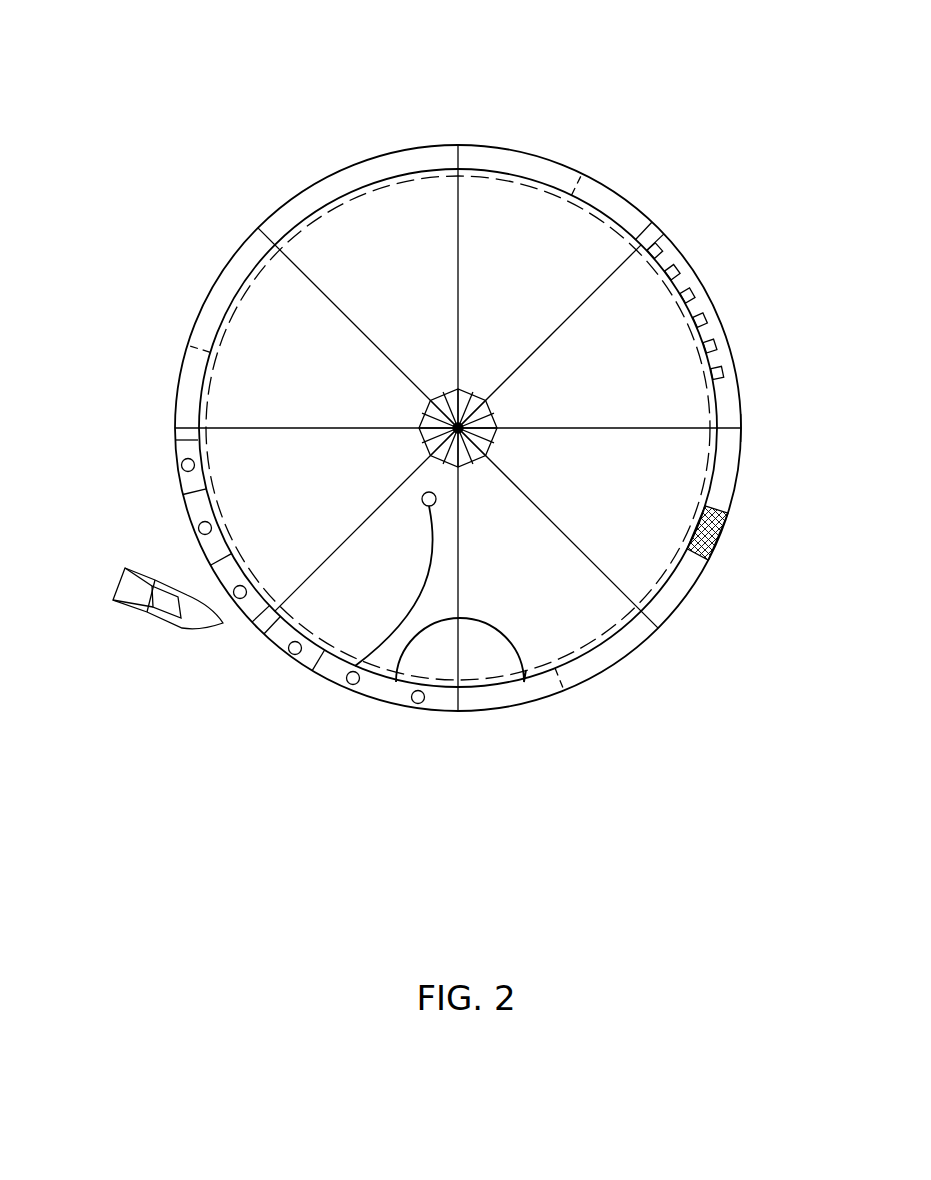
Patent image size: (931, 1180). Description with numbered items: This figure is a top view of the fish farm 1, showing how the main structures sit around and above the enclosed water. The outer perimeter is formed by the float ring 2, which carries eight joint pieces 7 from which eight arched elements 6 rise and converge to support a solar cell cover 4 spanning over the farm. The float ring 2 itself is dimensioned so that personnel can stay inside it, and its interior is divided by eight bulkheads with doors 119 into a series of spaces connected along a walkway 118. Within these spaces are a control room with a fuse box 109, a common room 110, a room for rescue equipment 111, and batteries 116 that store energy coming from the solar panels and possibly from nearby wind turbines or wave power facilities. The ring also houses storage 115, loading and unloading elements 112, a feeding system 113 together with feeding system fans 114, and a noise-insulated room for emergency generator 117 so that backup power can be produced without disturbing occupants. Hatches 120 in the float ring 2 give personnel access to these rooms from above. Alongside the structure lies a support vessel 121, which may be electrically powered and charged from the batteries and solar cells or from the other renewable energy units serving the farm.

The fish farm 1 is at (156, 273).
The float ring 2 is at (297, 207).
The solar cell cover 4 is at (635, 493).
The arched element 6 is at (612, 183).
The joint piece 7 is at (660, 235).
The control room with fuse box 109 is at (362, 152).
The common room 110 is at (210, 290).
The room for rescue equipment 111 is at (200, 465).
The loading and unloading elements 112 is at (718, 537).
The feeding system 113 is at (417, 600).
The feeding system fans 114 is at (493, 707).
The storage 115 is at (742, 448).
The batteries 116 is at (707, 330).
The noise-insulated room for emergency generator 117 is at (532, 152).
The walkway 118 is at (178, 445).
The bulkheads with doors 119 is at (665, 636).
The hatches 120 is at (291, 652).
The support vessel 121 is at (128, 575).